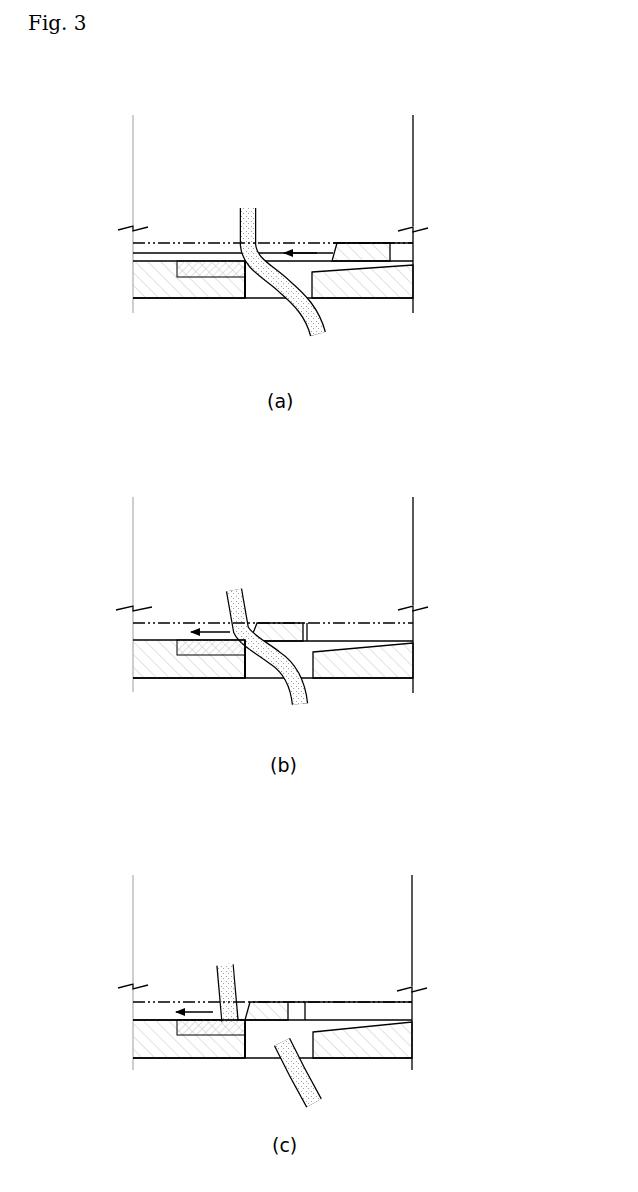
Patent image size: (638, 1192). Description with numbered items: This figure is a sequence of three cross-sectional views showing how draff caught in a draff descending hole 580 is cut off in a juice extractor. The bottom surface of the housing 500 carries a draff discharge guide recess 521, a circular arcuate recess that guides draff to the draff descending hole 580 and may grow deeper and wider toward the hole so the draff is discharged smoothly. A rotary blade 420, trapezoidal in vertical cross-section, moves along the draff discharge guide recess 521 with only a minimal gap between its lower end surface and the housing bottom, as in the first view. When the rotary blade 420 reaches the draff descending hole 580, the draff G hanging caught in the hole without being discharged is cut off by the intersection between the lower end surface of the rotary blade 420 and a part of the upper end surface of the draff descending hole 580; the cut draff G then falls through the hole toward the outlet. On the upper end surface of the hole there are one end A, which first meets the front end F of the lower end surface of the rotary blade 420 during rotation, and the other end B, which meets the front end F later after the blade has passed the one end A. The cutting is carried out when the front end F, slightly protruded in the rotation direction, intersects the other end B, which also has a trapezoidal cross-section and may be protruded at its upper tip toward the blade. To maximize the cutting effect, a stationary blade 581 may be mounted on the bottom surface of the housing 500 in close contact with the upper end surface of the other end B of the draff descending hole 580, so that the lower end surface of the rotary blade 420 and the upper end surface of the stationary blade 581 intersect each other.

The housing 500 is at (169, 326).
The draff descending hole 580 is at (260, 290).
The stationary blade 581 is at (211, 268).
The rotary blade 420 is at (368, 255).
The draff discharge guide recess 521 is at (413, 261).
The draff G is at (257, 229).
The front end of the lower end surface of the rotary blade F is at (335, 261).
The one end of the upper end surface of the draff descending hole A is at (300, 305).
The other end of the upper end surface of the draff descending hole B is at (243, 298).